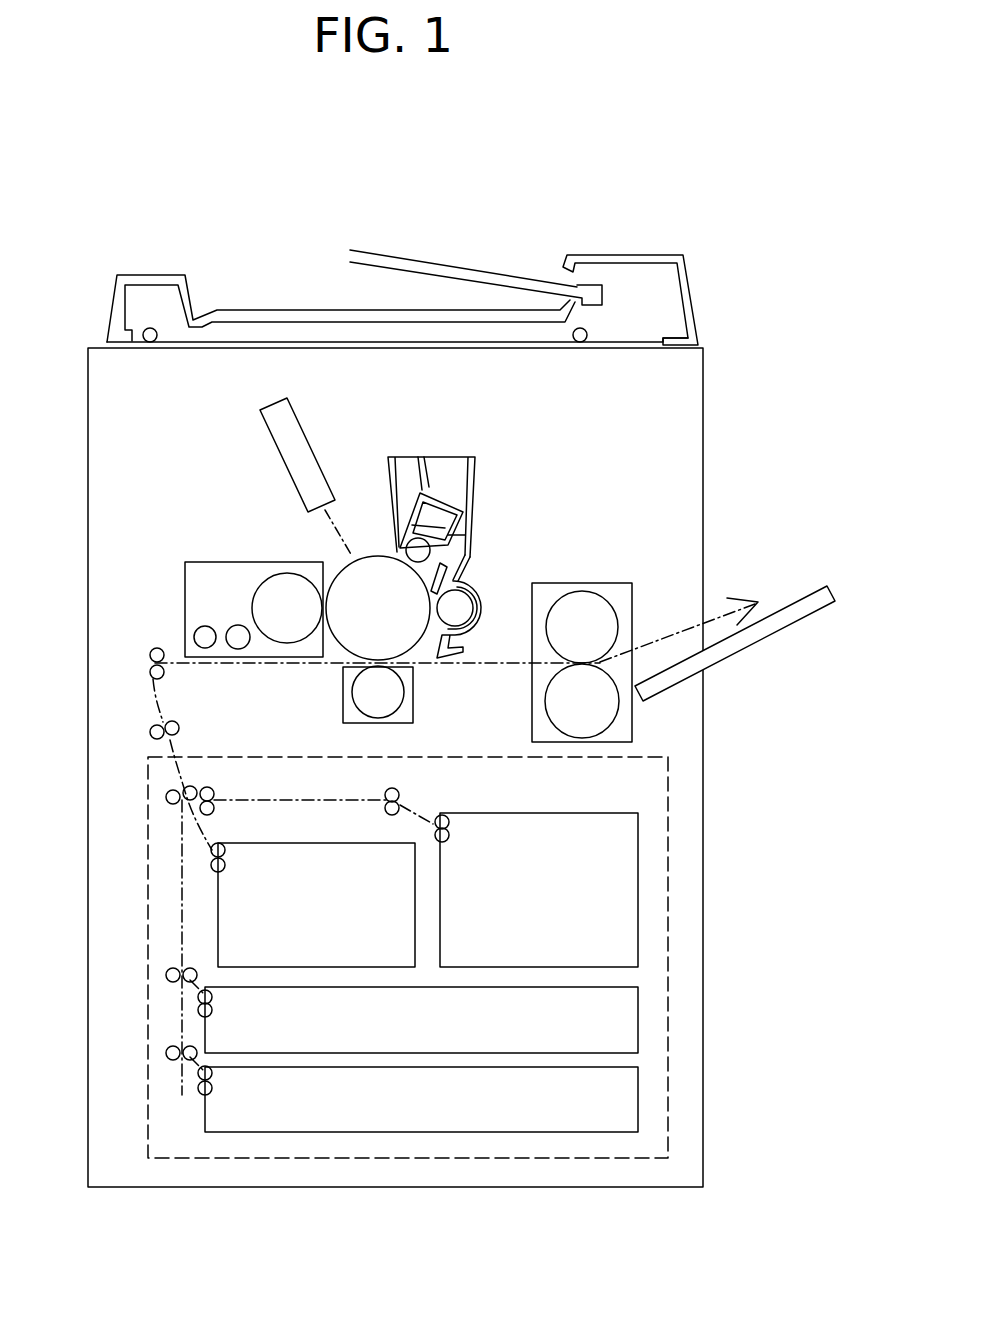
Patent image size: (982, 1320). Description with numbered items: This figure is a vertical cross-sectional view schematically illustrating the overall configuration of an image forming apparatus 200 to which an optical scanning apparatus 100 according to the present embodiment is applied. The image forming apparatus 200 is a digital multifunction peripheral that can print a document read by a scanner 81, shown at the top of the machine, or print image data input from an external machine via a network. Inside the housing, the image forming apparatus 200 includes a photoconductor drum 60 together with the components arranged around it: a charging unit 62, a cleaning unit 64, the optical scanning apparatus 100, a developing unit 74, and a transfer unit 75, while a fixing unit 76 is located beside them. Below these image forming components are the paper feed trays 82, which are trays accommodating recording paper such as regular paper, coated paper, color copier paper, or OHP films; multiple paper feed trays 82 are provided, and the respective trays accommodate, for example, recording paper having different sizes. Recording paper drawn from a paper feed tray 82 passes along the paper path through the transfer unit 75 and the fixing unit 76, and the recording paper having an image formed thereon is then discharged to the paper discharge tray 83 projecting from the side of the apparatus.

The image forming apparatus 200 is at (468, 213).
The scanner 81 is at (600, 257).
The optical scanning apparatus 100 is at (327, 450).
The photoconductor drum 60 is at (368, 553).
The developing unit 74 is at (205, 560).
The transfer unit 75 is at (413, 692).
The charging unit 62 is at (470, 542).
The cleaning unit 64 is at (462, 578).
The fixing unit 76 is at (600, 583).
The paper discharge tray 83 is at (803, 590).
The paper feed tray 82 is at (668, 820).